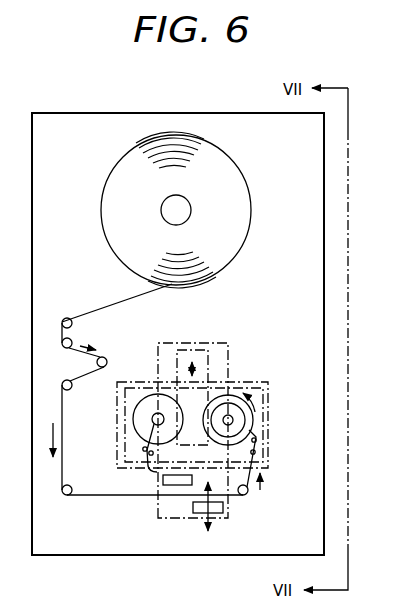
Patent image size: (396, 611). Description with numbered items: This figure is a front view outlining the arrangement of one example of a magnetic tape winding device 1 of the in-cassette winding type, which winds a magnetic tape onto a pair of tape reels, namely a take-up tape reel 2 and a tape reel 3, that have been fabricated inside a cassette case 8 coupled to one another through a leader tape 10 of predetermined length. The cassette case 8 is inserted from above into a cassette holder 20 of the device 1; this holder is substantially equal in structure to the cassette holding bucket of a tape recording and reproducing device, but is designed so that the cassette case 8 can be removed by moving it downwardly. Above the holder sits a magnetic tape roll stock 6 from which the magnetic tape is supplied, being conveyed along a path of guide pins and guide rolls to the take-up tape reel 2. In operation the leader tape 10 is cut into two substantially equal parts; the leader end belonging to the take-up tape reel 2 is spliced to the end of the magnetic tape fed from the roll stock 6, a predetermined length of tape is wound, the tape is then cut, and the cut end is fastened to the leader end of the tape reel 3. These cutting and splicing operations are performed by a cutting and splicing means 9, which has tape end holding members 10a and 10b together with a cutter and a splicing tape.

The magnetic tape winding device 1 is at (330, 176).
The take-up tape reel 2 is at (252, 415).
The tape reel 3 is at (134, 407).
The magnetic tape roll stock 6 is at (252, 200).
The cassette case 8 is at (263, 439).
The cutting and splicing means 9 is at (229, 357).
The leader tape 10 is at (152, 470).
The tape end holding member 10a is at (165, 481).
The tape end holding member 10b is at (222, 507).
The cassette holder 20 is at (262, 381).